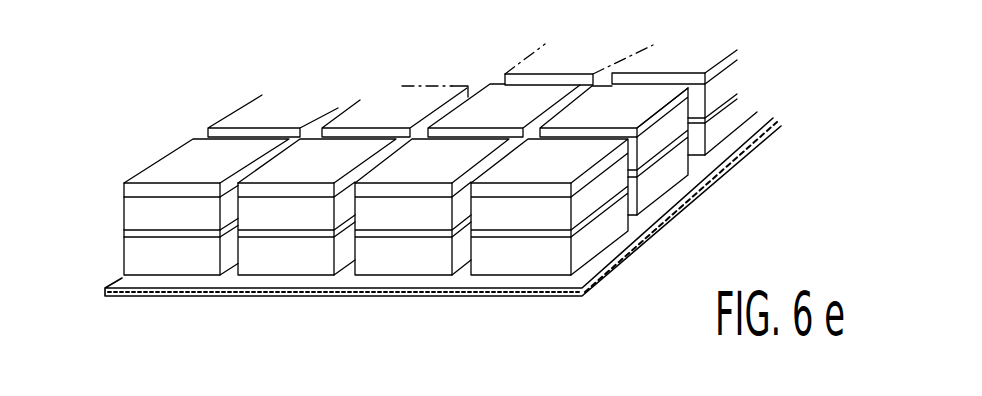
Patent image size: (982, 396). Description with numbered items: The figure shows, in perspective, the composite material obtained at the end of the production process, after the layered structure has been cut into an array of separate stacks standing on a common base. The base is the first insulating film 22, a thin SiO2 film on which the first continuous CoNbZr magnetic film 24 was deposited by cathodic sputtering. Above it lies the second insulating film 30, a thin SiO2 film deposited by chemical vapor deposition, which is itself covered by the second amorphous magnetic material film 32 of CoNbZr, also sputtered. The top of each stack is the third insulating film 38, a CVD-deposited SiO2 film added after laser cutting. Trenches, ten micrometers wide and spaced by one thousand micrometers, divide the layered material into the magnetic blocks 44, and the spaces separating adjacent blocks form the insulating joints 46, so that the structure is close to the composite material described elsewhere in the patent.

The first insulating film 22 is at (247, 292).
The first continuous film 24 is at (119, 261).
The second insulating film 30 is at (120, 233).
The second amorphous magnetic material film 32 is at (120, 214).
The third insulating film 38 is at (121, 183).
The magnetic blocks 44 is at (516, 214).
The insulating joints 46 is at (342, 118).